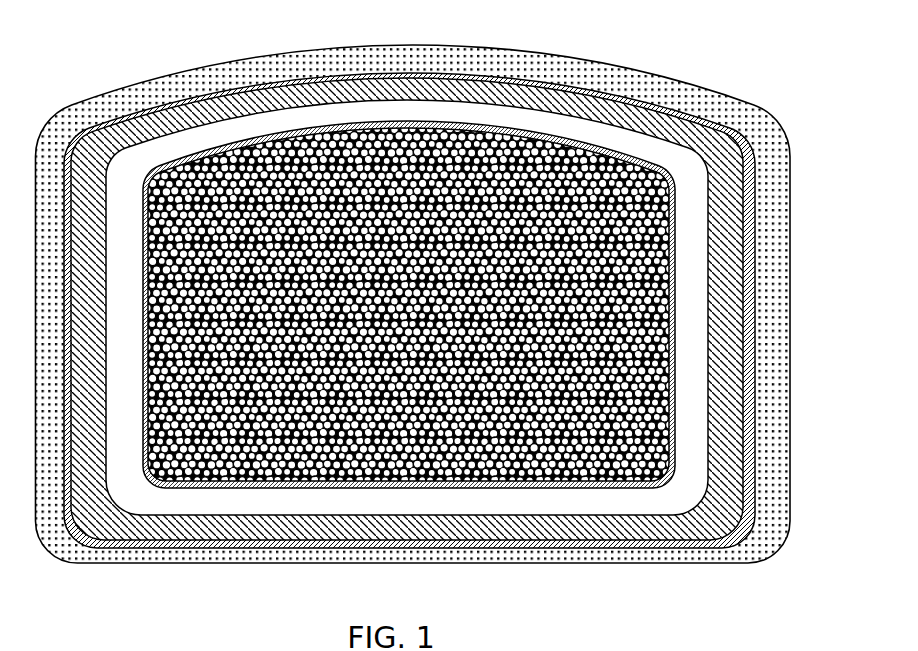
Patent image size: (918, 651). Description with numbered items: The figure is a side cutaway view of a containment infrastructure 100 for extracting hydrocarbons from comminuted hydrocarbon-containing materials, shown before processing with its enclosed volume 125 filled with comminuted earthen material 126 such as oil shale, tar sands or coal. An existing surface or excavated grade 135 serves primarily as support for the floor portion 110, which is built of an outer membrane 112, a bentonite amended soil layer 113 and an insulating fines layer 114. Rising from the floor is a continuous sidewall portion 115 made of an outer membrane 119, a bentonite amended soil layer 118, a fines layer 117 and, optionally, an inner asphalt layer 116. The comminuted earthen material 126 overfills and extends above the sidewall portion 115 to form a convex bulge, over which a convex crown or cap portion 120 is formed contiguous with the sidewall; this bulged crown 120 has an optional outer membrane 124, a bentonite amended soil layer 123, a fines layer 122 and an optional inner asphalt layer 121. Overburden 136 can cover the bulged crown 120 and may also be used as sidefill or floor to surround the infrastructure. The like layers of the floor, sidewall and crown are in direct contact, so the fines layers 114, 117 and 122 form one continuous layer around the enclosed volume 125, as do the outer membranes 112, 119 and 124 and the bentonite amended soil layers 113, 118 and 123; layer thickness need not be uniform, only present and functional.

The containment infrastructure 100 is at (137, 63).
The floor portion 110 is at (325, 546).
The outer membrane 112 is at (482, 537).
The bentonite amended soil layer 113 is at (550, 522).
The insulating fines layer 114 is at (603, 497).
The sidewall portion 115 is at (758, 382).
The inner asphalt layer 116 is at (665, 325).
The fines layer 117 is at (690, 285).
The bentonite amended soil layer 118 is at (720, 243).
The outer membrane 119 is at (748, 193).
The convex crown or cap portion 120 is at (297, 62).
The inner asphalt layer 121 is at (666, 148).
The fines layer 122 is at (678, 136).
The bentonite amended soil layer 123 is at (627, 108).
The outer membrane 124 is at (588, 80).
The enclosed volume 125 is at (212, 462).
The comminuted earthen material 126 is at (397, 440).
The existing surface or excavated grade 135 is at (685, 548).
The overburden 136 is at (527, 52).